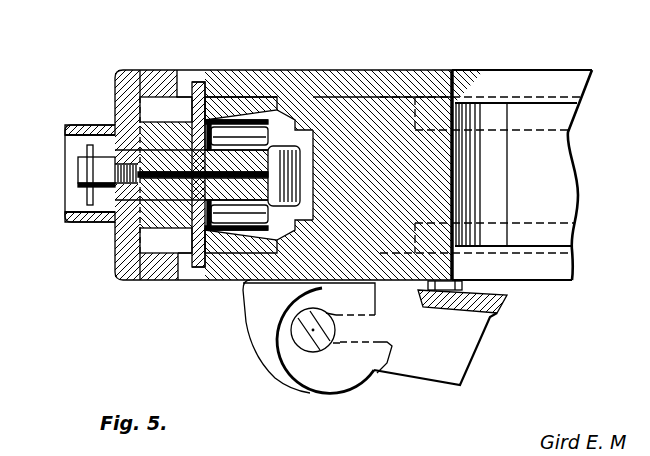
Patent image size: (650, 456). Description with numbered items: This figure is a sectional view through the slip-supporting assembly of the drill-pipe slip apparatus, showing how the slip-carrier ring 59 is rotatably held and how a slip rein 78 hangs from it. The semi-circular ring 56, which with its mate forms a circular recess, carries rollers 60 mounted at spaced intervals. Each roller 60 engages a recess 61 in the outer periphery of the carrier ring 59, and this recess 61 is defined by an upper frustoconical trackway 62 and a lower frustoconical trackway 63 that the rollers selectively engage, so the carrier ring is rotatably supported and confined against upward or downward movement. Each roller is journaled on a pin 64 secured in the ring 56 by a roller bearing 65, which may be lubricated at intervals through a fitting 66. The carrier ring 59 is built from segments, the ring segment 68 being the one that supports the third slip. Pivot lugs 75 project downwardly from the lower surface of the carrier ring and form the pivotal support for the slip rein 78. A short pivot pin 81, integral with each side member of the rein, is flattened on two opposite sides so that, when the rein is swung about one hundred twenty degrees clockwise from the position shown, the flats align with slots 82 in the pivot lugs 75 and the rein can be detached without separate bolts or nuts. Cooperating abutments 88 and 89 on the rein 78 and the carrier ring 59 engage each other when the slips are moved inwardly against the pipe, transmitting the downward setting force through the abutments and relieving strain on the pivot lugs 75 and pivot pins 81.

The semi-circular ring 56 is at (123, 77).
The slip-carrier ring 59 is at (413, 61).
The rollers 60 is at (230, 108).
The recess 61 is at (304, 142).
The upper frustoconical trackway 62 is at (290, 116).
The lower frustoconical trackway 63 is at (290, 240).
The pin 64 is at (130, 160).
The roller bearing 65 is at (190, 224).
The fitting 66 is at (74, 177).
The ring segment 68 is at (432, 96).
The pivot lugs 75 is at (265, 333).
The slip rein 78 is at (402, 368).
The pivot pin 81 is at (298, 343).
The slots 82 is at (355, 340).
The abutment 88 is at (457, 300).
The abutment 89 is at (434, 300).